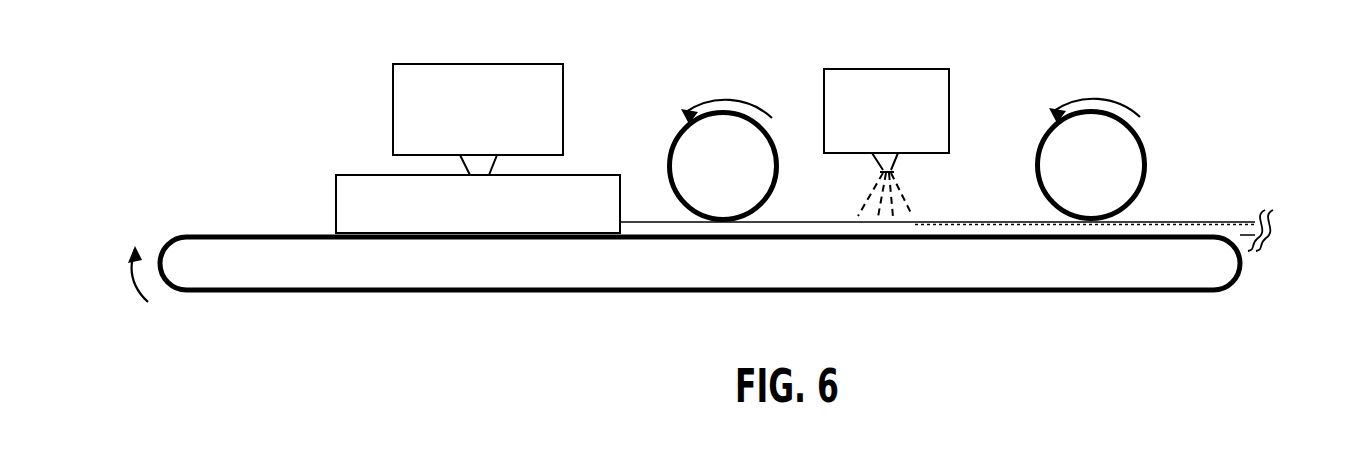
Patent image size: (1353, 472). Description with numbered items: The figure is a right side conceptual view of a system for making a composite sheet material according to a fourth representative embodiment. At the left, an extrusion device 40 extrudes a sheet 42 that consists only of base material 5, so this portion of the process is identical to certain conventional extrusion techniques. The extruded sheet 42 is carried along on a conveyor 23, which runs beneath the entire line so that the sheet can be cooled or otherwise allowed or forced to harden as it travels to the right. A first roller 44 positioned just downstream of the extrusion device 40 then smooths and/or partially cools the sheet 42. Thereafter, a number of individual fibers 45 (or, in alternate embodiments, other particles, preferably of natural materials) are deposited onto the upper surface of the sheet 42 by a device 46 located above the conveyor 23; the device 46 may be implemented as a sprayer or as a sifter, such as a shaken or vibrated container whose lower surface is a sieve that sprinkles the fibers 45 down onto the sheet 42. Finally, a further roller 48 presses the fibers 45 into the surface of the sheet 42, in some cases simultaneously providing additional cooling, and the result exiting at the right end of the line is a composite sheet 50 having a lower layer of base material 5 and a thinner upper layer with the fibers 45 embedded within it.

The base material 5 is at (393, 112).
The conveyor 23 is at (943, 263).
The extrusion device 40 is at (336, 205).
The sheet 42 is at (656, 227).
The first roller 44 is at (669, 166).
The fibers 45 is at (890, 199).
The device 46 is at (878, 69).
The roller 48 is at (1145, 166).
The composite sheet 50 is at (1226, 221).